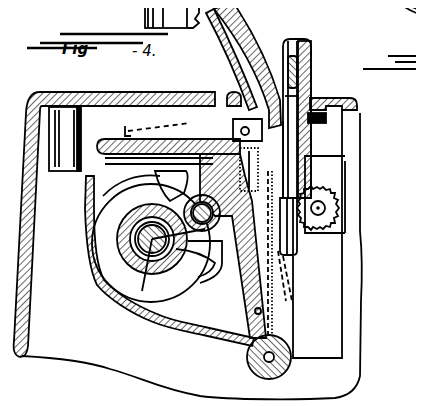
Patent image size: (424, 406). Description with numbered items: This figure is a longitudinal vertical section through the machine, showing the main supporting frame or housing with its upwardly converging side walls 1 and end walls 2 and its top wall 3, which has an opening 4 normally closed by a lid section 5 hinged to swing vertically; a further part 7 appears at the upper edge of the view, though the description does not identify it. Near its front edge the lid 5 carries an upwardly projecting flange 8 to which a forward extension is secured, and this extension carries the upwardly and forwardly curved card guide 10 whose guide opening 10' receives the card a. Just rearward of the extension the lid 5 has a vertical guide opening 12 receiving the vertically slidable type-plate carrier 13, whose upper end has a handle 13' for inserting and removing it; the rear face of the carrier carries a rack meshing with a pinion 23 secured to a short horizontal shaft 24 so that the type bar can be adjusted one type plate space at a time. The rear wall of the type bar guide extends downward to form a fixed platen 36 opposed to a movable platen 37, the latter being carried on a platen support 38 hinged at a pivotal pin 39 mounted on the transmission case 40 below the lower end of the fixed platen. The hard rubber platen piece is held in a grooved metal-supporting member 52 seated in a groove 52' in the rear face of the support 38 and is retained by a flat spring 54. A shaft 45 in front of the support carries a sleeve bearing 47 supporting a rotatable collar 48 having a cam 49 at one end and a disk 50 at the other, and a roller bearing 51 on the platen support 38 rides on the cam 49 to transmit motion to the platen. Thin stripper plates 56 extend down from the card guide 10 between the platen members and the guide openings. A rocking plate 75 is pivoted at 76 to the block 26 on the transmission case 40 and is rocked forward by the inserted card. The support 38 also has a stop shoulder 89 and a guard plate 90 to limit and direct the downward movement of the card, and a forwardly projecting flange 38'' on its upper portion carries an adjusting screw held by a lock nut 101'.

The side walls 1 is at (350, 376).
The end walls 2 is at (24, 312).
The top wall 3 is at (143, 92).
The opening 4 is at (229, 93).
The lid section 5 is at (350, 99).
The lever 7 is at (145, 8).
The flange 8 is at (306, 40).
The card guide 10 is at (247, 68).
The guide opening 10' is at (231, 59).
The vertical guide opening 12 is at (304, 45).
The type-plate carrier 13 is at (317, 234).
The handle 13' is at (296, 53).
The pinion 23 is at (338, 203).
The horizontal shaft 24 is at (326, 212).
The block 26 is at (340, 173).
The fixed platen 36 is at (307, 170).
The movable platen 37 is at (253, 164).
The platen support 38 is at (236, 246).
The forwardly projecting flange 38'' is at (166, 139).
The pivotal pin 39 is at (250, 366).
The transmission case 40 is at (90, 186).
The shaft 45 is at (160, 273).
The sleeve bearing 47 is at (126, 242).
The collar 48 is at (134, 226).
The cam 49 is at (140, 281).
The disk 50 is at (148, 191).
The roller bearing 51 is at (199, 262).
The grooved metal-supporting member 52 is at (197, 195).
The groove 52' is at (175, 186).
The flat spring 54 is at (276, 226).
The stripper plates 56 is at (302, 79).
The rocking plate 75 is at (233, 126).
The pivot 76 is at (260, 170).
The stop shoulder 89 is at (255, 312).
The guard plate 90 is at (272, 276).
The lock nut 101' is at (160, 121).
The card a is at (266, 31).